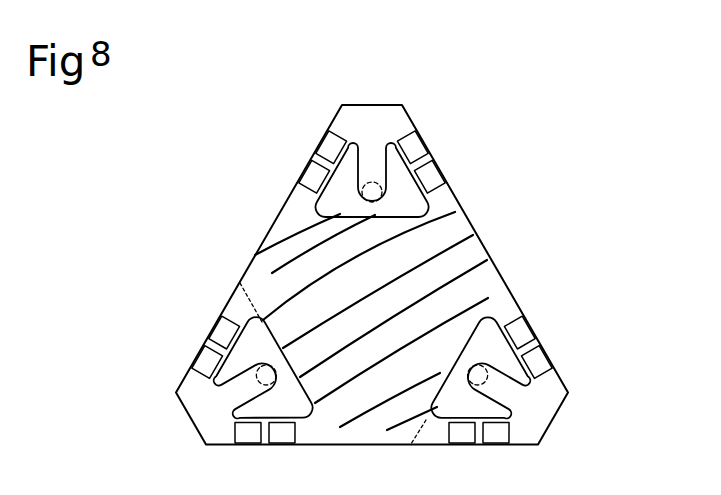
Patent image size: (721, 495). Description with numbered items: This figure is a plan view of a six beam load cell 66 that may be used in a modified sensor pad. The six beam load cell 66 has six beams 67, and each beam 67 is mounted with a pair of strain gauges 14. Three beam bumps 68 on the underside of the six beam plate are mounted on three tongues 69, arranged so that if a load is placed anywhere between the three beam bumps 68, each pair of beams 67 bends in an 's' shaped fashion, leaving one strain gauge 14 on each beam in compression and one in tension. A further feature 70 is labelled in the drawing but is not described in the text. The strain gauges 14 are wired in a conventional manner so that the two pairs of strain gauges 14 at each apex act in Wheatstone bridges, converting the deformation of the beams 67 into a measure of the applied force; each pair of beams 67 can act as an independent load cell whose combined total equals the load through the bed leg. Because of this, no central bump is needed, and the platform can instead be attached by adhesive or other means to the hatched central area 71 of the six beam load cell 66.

The strain gauge 14 is at (327, 143).
The six beam load cell 66 is at (540, 196).
The beam 67 is at (316, 157).
The beam bump 68 is at (372, 181).
The tongue 69 is at (536, 356).
The clamp arm 70 is at (503, 375).
The central area of the six beam plate 71 is at (300, 282).